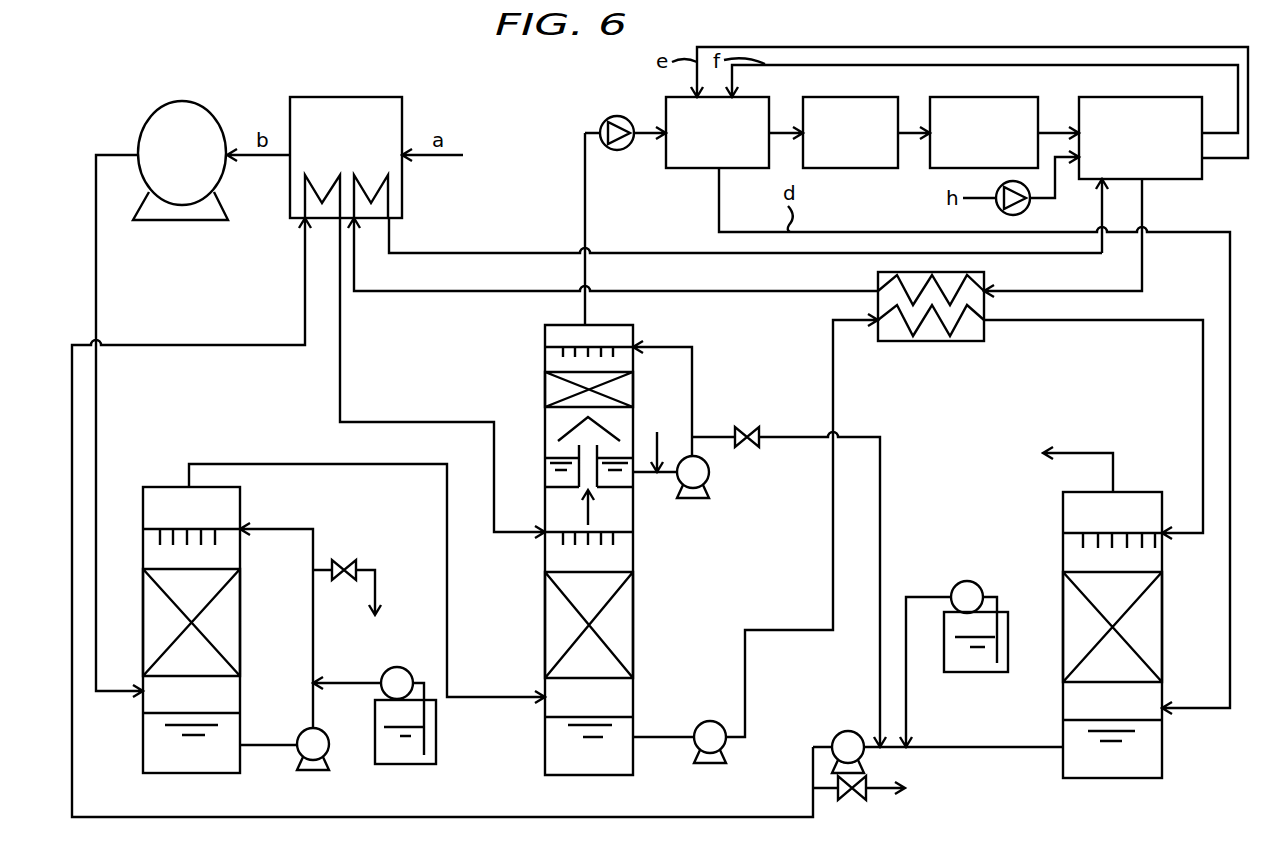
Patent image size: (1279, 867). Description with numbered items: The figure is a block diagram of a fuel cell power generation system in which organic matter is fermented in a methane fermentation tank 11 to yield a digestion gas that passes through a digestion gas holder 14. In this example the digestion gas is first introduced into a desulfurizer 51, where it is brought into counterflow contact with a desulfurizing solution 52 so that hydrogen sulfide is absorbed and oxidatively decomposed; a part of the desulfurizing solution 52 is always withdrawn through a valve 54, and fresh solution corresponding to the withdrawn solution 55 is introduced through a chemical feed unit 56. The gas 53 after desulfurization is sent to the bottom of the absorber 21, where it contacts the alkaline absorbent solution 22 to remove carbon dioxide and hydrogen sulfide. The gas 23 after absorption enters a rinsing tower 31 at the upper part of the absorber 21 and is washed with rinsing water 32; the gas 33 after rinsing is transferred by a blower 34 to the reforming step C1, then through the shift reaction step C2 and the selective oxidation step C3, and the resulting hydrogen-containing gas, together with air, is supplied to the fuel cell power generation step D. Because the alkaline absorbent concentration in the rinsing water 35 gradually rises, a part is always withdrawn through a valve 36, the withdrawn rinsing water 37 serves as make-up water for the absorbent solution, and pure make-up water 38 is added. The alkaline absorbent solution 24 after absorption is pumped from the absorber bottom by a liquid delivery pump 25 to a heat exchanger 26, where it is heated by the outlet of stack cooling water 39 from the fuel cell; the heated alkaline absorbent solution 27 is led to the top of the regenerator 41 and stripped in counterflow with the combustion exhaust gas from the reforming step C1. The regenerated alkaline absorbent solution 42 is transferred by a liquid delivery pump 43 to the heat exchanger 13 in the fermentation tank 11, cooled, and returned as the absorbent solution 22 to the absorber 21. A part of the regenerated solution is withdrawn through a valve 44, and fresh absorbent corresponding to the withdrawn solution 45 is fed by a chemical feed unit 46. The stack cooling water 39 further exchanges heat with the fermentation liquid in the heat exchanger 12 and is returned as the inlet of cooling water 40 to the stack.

The fermentation tank 11 is at (402, 112).
The heat exchanger 12 is at (388, 176).
The heat exchanger 13 is at (305, 176).
The digestion gas holder 14 is at (197, 253).
The absorber 21 is at (637, 807).
The alkaline absorbent solution 22 is at (494, 471).
The gas after the absorption 23 is at (582, 508).
The alkaline absorbent solution after the absorption operation 24 is at (665, 737).
The liquid delivery pump 25 is at (710, 721).
The heat exchanger 26 is at (928, 342).
The heated alkaline absorbent solution 27 is at (1187, 533).
The rinsing tower 31 is at (537, 393).
The rinsing water 32 is at (662, 346).
The gas after the rinsing operation 33 is at (585, 196).
The blower 34 is at (616, 151).
The rinsing water 35 is at (645, 474).
The valve 36 is at (746, 427).
The withdrawn rinsing water 37 is at (804, 438).
The make-up water 38 is at (657, 439).
The outlet of stack cooling water 39 is at (1143, 202).
The inlet of cooling water 40 is at (1102, 203).
The regenerator 41 is at (1167, 816).
The regenerated alkaline absorbent solution 42 is at (990, 749).
The liquid delivery pump 43 is at (848, 730).
The valve 44 is at (857, 796).
The withdrawn solution 45 is at (901, 792).
The chemical feed unit 46 is at (1038, 721).
The desulfurizer 51 is at (245, 806).
The desulfurizing solution 52 is at (281, 527).
The gas after the desulfurization operation 53 is at (257, 462).
The valve 54 is at (343, 560).
The withdrawn solution 55 is at (371, 608).
The chemical feed unit 56 is at (468, 808).
The reforming step C1 is at (748, 97).
The shift reaction step C2 is at (875, 97).
The selective oxidation step C3 is at (1015, 97).
The fuel cell power generation step D is at (1175, 97).